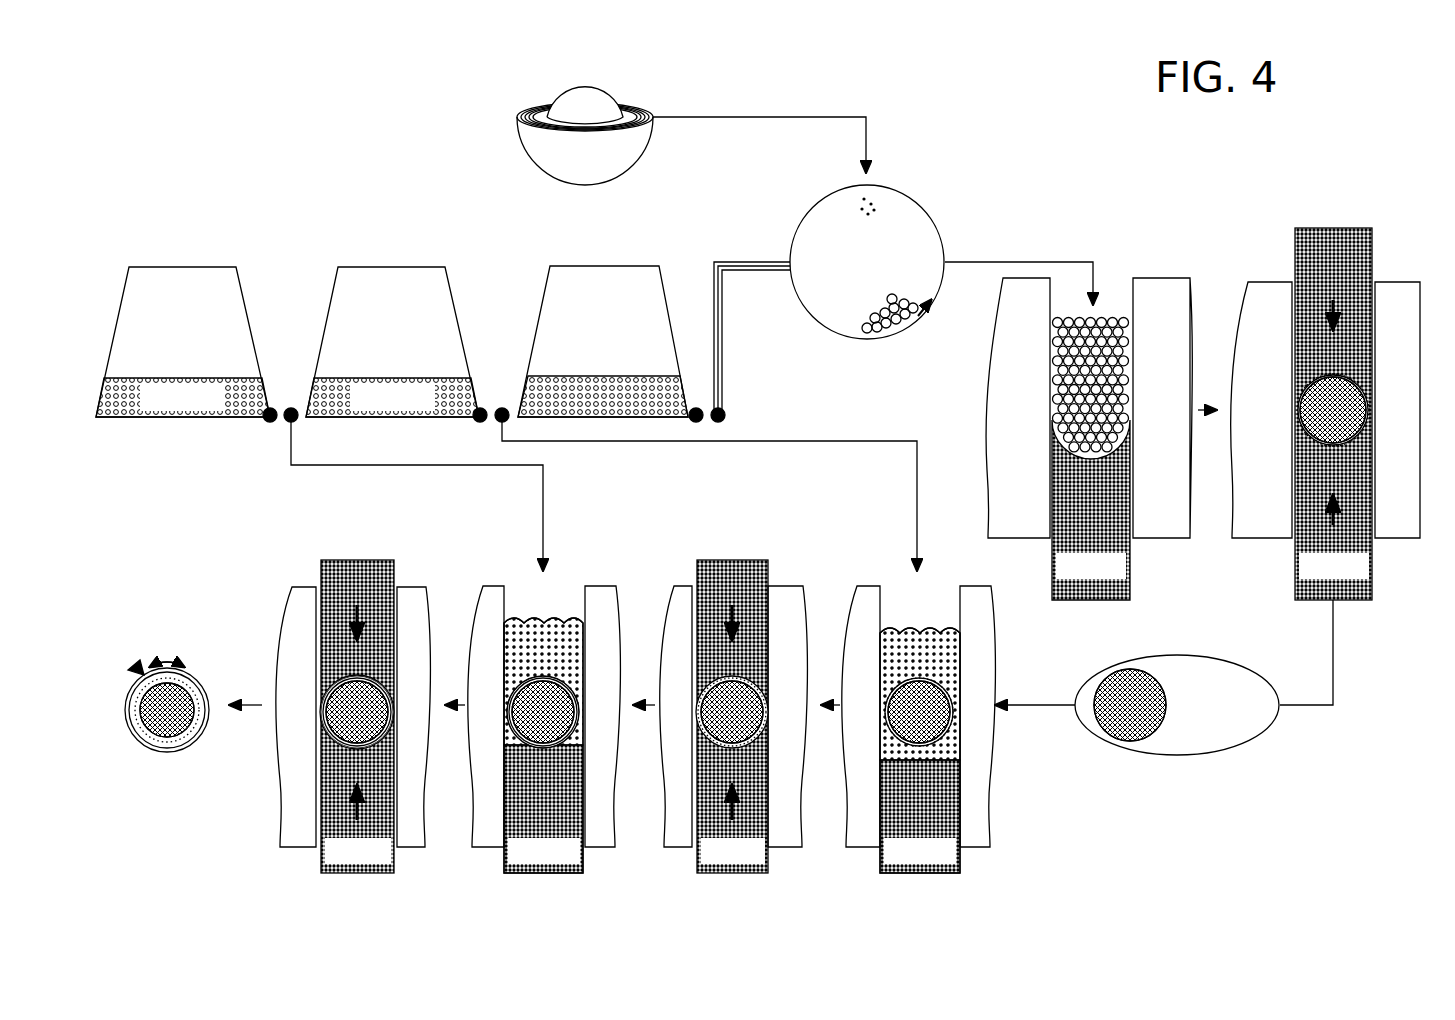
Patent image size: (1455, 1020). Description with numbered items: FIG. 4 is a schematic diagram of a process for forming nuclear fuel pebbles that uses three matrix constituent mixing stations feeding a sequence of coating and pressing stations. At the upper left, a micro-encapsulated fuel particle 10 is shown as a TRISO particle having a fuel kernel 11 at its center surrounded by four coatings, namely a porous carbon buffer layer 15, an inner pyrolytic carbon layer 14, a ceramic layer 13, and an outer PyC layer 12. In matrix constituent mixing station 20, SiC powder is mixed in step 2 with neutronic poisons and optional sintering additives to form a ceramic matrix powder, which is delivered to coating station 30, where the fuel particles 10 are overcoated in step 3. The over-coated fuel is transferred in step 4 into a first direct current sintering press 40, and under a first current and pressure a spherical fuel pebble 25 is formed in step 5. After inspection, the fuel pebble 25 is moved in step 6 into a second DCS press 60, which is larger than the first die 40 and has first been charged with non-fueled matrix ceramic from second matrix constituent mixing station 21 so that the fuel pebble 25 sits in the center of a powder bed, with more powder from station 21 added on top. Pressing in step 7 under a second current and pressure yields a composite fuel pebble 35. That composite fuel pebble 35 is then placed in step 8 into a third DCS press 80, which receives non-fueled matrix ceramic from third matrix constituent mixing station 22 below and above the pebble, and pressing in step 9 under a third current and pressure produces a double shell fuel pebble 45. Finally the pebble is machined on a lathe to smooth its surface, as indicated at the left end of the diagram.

The mixing step 2 is at (520, 225).
The overcoating step 3 is at (874, 238).
The transfer step 4 is at (1094, 371).
The fuel pebble forming step 5 is at (1325, 354).
The fuel pebble transfer step 6 is at (929, 704).
The composite pebble pressing step 7 is at (734, 704).
The composite pebble transfer step 8 is at (553, 704).
The double shell pebble pressing step 9 is at (353, 682).
The micro-encapsulated fuel particle 10 is at (559, 108).
The fuel kernel 11 is at (583, 92).
The outer PyC layer 12 is at (545, 106).
The ceramic layer 13 is at (531, 110).
The inner pyrolytic carbon layer 14 is at (525, 114).
The porous carbon buffer layer 15 is at (521, 118).
The matrix constituent mixing station 20 is at (613, 310).
The second matrix constituent mixing station 21 is at (331, 250).
The third matrix constituent mixing station 22 is at (120, 250).
The fuel pebble 25 is at (1139, 722).
The coating station 30 is at (945, 166).
The composite fuel pebble 35 is at (797, 877).
The first direct current sintering press 40 is at (1166, 258).
The double shell fuel pebble 45 is at (183, 722).
The second DCS press 60 is at (1000, 890).
The third DCS press 80 is at (623, 890).